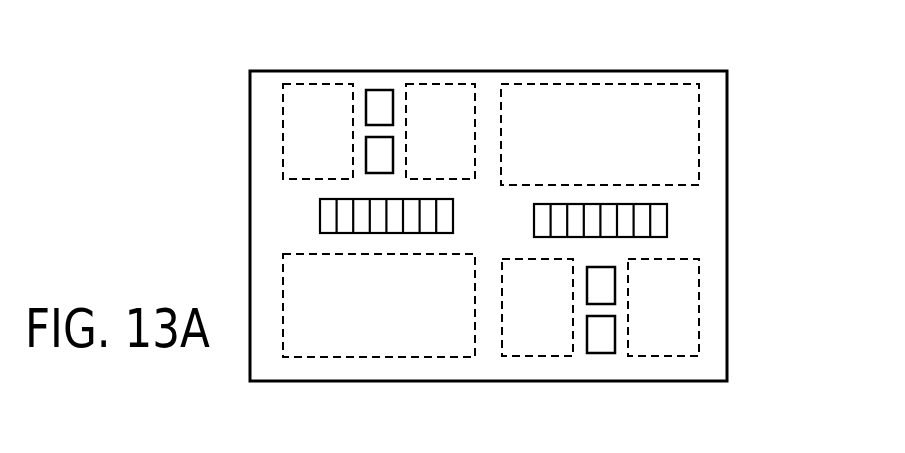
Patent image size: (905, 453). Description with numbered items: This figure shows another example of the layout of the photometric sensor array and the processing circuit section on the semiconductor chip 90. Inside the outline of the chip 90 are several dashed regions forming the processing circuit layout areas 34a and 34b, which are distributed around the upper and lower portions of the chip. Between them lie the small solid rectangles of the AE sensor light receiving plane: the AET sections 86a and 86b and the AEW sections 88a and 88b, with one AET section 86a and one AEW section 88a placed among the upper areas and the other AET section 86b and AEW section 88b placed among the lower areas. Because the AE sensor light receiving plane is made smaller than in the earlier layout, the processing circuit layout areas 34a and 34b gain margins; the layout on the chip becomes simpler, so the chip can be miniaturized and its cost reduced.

The wafer carrier / mounting plate 90 is at (727, 96).
The processing circuit layout area 34a is at (298, 118).
The processing circuit layout area 34b is at (618, 95).
The AET section 86a is at (380, 153).
The AET section 86b is at (607, 270).
The AEW section 88a is at (380, 100).
The AEW section 88b is at (607, 345).